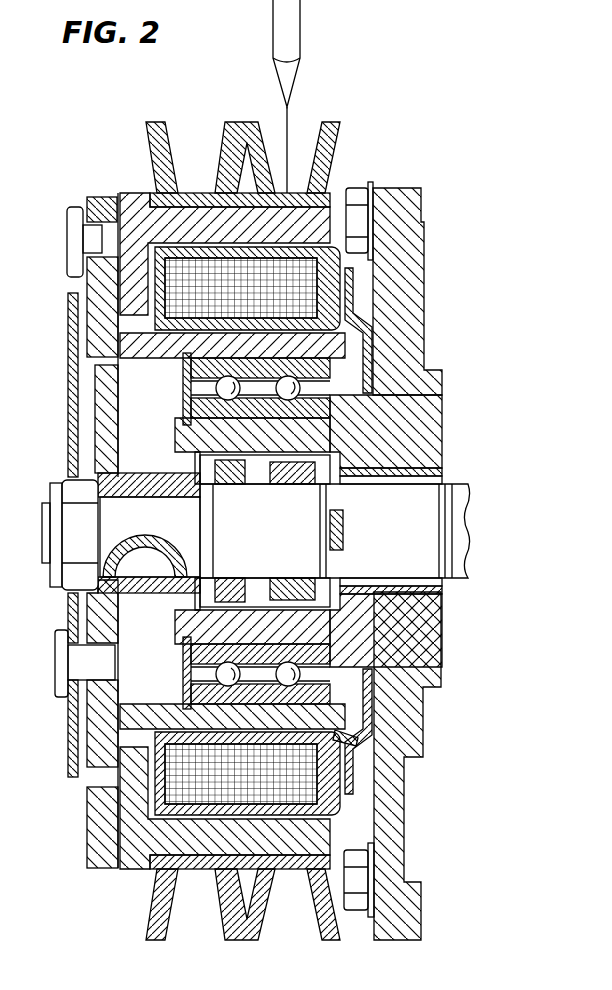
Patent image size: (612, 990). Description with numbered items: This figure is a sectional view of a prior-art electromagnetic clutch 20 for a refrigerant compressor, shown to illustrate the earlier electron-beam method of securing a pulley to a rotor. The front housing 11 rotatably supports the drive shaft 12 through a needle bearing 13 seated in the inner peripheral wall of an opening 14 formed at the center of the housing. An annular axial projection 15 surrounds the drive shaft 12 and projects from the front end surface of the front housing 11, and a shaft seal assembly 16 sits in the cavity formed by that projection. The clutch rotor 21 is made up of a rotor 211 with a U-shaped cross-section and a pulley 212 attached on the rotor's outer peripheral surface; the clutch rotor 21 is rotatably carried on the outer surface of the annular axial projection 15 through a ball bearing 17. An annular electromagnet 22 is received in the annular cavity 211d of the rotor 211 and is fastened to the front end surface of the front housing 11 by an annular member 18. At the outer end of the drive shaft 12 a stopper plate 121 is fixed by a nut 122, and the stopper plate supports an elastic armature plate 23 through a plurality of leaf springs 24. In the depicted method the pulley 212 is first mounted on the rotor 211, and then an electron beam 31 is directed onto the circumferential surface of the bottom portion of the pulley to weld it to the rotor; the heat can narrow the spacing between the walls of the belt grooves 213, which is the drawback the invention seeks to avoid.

The electromagnetic clutch 20 is at (78, 168).
The front housing 11 is at (398, 185).
The drive shaft 12 is at (408, 567).
The needle bearing 13 is at (443, 463).
The opening 14 is at (403, 467).
The annular axial projection 15 is at (180, 436).
The shaft seal assembly 16 is at (208, 597).
The ball bearing 17 is at (187, 370).
The annular member 18 is at (370, 313).
The clutch rotor 21 is at (236, 556).
The rotor 211 is at (277, 833).
The annular cavity 211d is at (335, 733).
The pulley 212 is at (238, 927).
The grooves 213 is at (200, 900).
The annular electromagnet 22 is at (183, 291).
The armature plate 23 is at (103, 197).
The leaf springs 24 is at (82, 285).
The electron beam 31 is at (293, 133).
The stopper plate 121 is at (67, 378).
The nut 122 is at (70, 487).